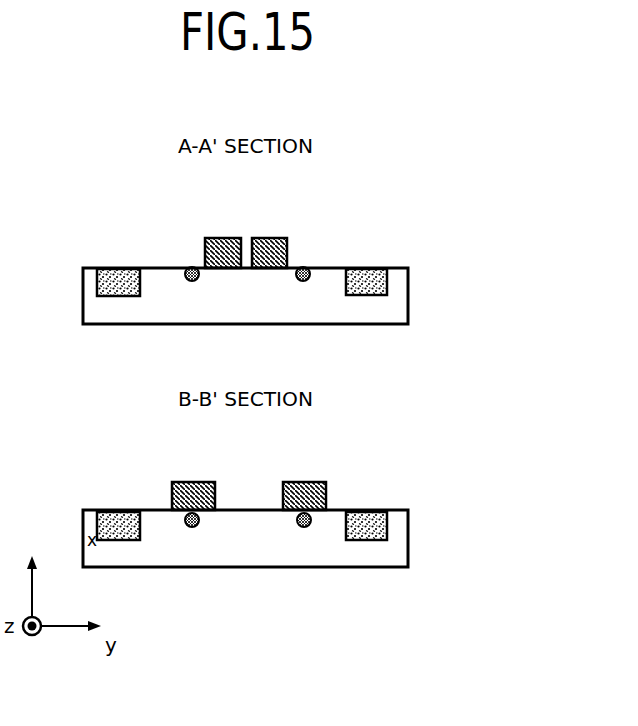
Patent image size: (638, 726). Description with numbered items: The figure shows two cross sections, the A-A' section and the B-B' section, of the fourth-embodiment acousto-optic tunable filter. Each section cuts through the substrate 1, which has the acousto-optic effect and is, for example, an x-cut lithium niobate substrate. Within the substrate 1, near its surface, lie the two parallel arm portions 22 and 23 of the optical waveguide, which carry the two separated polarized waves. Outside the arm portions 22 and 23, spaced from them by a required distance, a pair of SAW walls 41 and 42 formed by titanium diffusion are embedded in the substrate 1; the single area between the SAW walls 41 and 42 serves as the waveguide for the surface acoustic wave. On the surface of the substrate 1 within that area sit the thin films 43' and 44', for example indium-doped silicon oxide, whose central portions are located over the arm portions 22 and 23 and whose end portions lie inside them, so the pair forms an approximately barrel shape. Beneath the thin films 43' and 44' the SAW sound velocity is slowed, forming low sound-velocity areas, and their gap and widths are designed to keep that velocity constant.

The substrate 1 is at (408, 295).
The arm portion 22 is at (192, 282).
The arm portion 23 is at (303, 282).
The SAW wall 41 is at (113, 266).
The SAW wall 42 is at (365, 267).
The thin film 43' is at (201, 343).
The thin film 44' is at (290, 343).